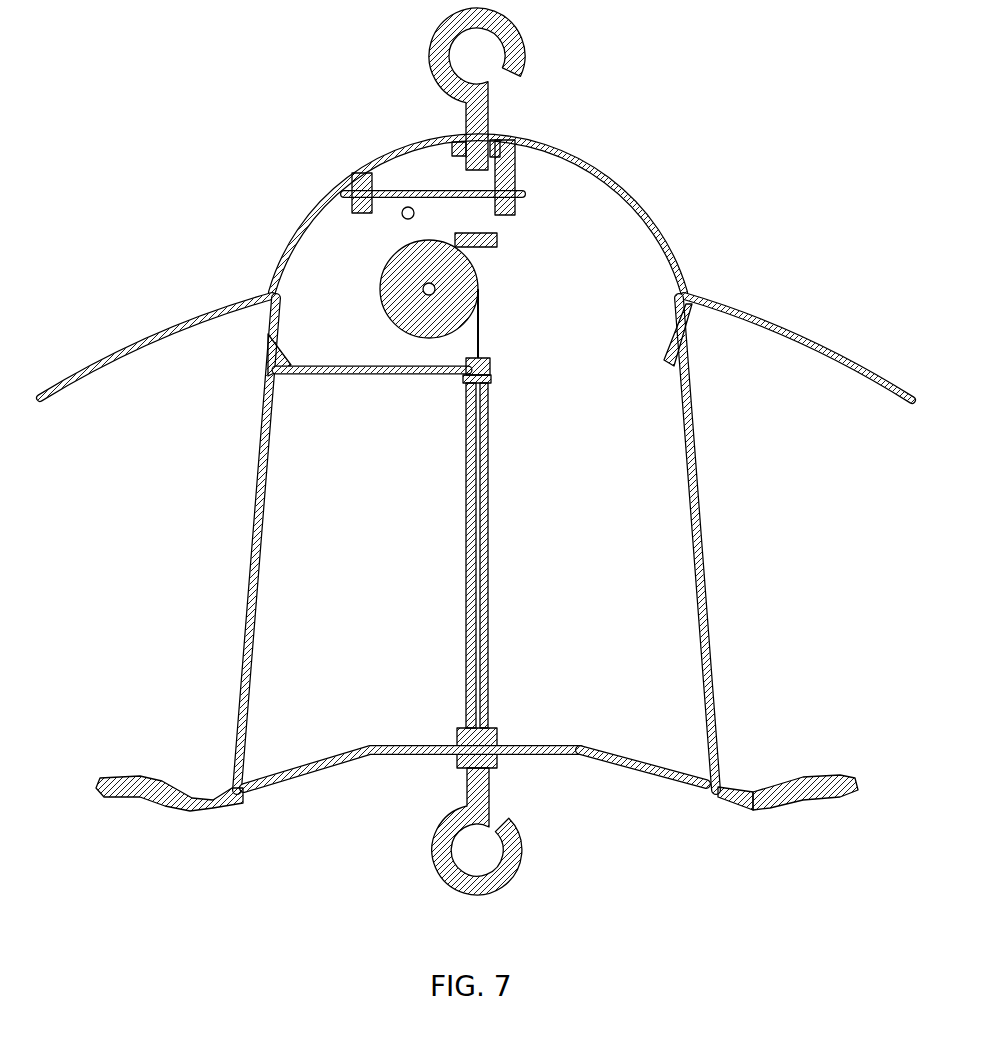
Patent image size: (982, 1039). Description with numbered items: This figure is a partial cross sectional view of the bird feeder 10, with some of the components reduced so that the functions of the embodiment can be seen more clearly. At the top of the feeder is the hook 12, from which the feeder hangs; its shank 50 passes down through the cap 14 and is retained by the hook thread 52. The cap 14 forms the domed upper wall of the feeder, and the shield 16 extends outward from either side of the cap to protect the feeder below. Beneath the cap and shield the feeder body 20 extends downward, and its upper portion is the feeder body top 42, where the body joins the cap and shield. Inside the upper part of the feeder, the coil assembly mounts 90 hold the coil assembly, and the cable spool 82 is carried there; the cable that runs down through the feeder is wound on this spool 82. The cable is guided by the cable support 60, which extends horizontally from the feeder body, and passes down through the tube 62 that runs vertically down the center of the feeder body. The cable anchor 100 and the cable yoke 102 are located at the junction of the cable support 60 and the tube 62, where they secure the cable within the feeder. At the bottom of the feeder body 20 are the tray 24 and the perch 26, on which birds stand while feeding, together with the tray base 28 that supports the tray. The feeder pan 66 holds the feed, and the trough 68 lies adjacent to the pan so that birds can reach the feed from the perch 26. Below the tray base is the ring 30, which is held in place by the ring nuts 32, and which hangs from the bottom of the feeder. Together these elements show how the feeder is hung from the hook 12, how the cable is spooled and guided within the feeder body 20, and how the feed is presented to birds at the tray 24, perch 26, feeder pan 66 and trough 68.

The bird feeder 10 is at (476, 436).
The hook 12 is at (523, 34).
The cap 14 is at (587, 163).
The shield 16 is at (752, 313).
The feeder body 20 is at (252, 517).
The tray 24 is at (180, 810).
The perch 26 is at (853, 778).
The tray base 28 is at (332, 763).
The ring 30 is at (513, 880).
The ring nuts 32 is at (493, 725).
The feeder body top 42 is at (272, 338).
The shank 50 is at (480, 120).
The hook thread 52 is at (443, 137).
The cable support 60 is at (378, 373).
The tube 62 is at (488, 490).
The feeder pan 66 is at (612, 755).
The trough 68 is at (743, 803).
The cable spool 82 is at (397, 268).
The coil assembly mounts 90 is at (360, 183).
The cable anchor 100 is at (487, 365).
The cable yoke 102 is at (472, 383).